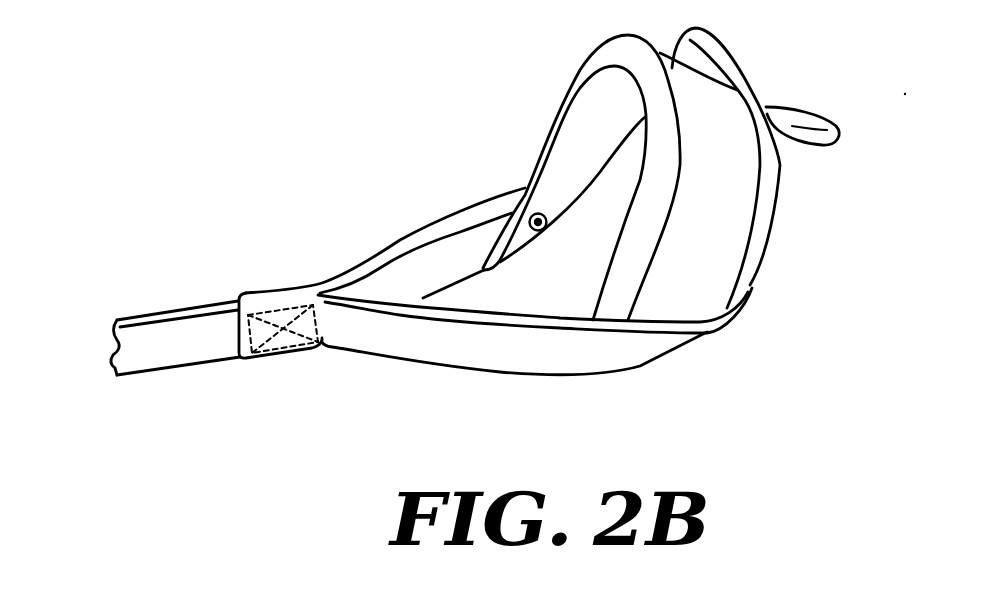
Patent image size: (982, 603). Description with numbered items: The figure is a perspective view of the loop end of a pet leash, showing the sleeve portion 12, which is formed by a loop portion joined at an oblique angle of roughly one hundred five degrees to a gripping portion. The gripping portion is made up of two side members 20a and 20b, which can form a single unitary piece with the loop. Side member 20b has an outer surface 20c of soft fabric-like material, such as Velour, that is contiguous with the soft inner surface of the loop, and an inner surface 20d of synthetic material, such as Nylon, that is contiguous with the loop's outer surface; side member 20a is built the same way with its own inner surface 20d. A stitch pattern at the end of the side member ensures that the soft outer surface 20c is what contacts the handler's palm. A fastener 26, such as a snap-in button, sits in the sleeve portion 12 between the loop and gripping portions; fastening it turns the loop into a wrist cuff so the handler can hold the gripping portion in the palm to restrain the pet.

The sleeve portion 12 is at (513, 83).
The side member 20a is at (402, 197).
The side member 20b is at (365, 370).
The outer surface 20c is at (493, 354).
The inner surface 20d is at (422, 270).
The fastener 26 is at (545, 227).